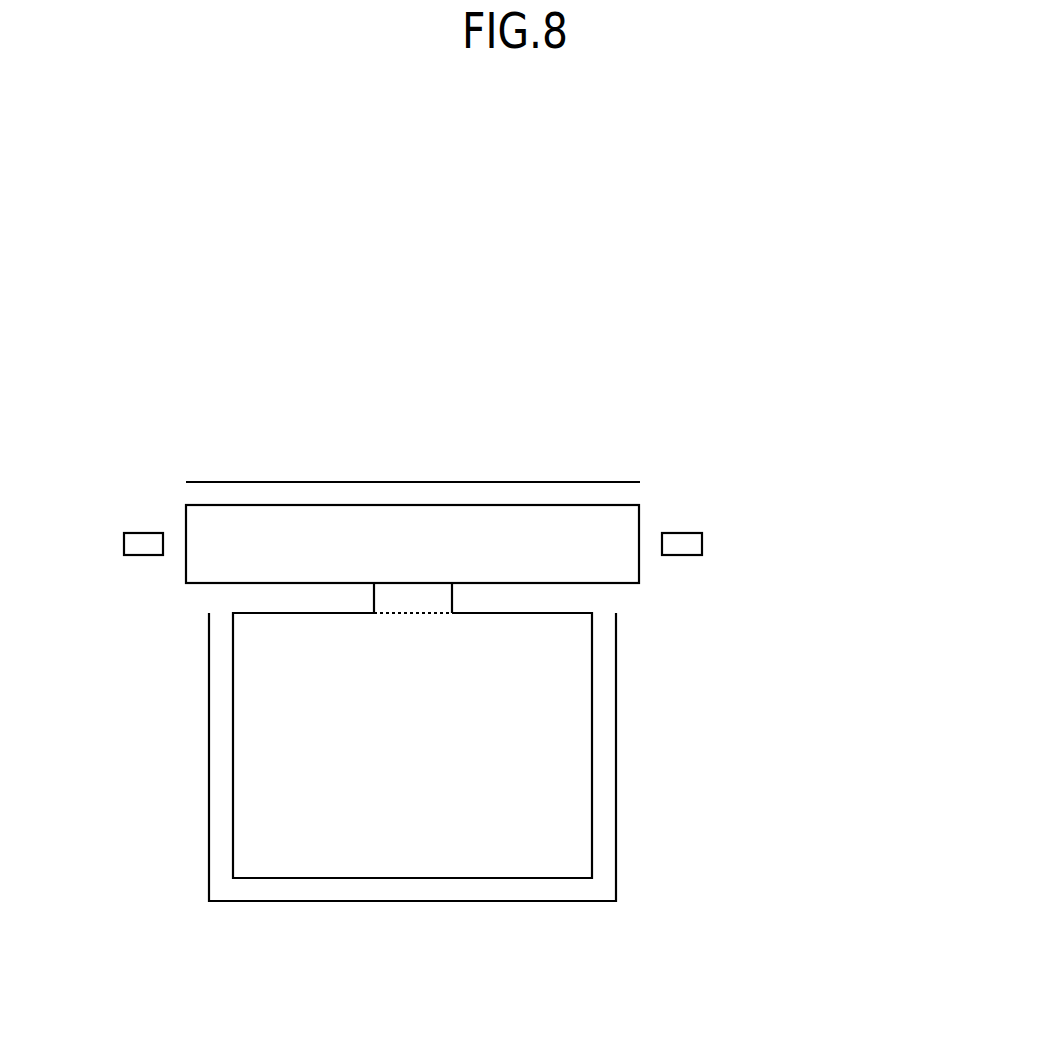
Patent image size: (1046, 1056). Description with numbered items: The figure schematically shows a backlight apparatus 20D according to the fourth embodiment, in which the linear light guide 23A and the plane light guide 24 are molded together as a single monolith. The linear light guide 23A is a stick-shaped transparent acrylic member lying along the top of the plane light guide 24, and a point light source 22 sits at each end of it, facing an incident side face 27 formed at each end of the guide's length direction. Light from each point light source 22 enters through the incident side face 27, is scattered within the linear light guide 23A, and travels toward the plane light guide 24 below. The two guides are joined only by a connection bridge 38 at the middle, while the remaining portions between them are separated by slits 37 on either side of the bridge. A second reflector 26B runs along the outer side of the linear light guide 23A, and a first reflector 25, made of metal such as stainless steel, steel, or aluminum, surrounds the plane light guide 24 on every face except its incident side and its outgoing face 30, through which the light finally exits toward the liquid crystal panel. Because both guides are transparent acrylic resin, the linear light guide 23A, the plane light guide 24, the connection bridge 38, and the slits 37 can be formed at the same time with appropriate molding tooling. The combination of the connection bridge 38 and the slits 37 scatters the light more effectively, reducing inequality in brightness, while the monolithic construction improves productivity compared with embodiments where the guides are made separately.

The backlight apparatus 20D is at (426, 288).
The point light source 22 is at (124, 543).
The linear light guide 23A is at (613, 531).
The plane light guide 24 is at (562, 808).
The first reflector 25 is at (617, 885).
The second reflector 26B is at (279, 481).
The incident side face 27 is at (186, 568).
The outgoing face 30 is at (548, 722).
The slit 37 is at (343, 597).
The connection bridge 38 is at (410, 598).